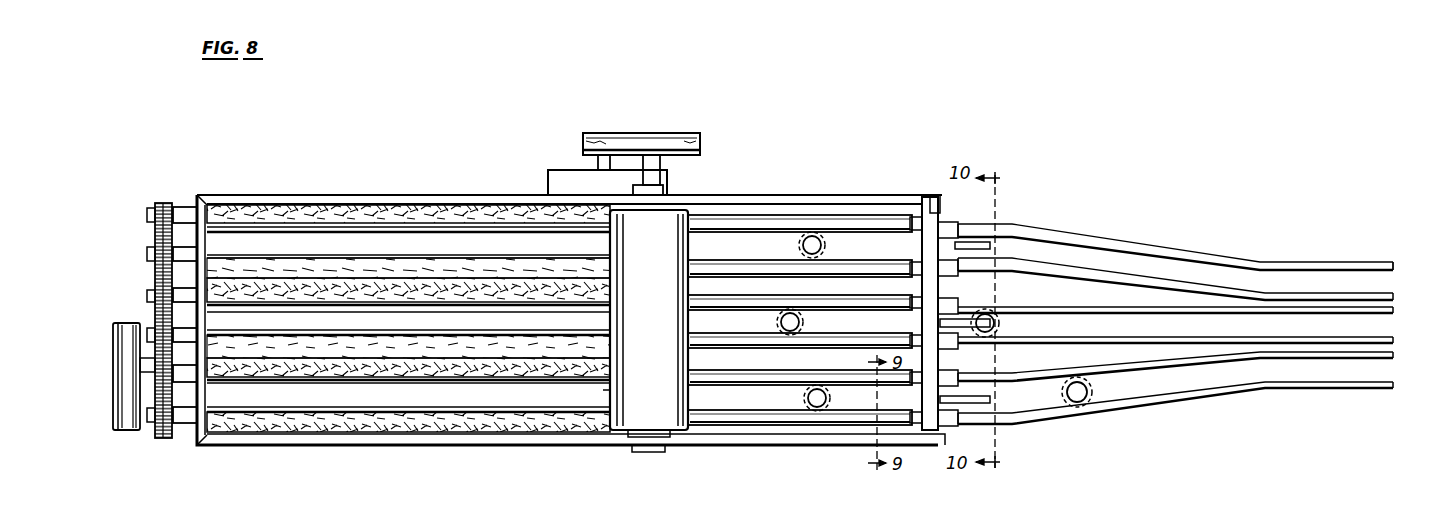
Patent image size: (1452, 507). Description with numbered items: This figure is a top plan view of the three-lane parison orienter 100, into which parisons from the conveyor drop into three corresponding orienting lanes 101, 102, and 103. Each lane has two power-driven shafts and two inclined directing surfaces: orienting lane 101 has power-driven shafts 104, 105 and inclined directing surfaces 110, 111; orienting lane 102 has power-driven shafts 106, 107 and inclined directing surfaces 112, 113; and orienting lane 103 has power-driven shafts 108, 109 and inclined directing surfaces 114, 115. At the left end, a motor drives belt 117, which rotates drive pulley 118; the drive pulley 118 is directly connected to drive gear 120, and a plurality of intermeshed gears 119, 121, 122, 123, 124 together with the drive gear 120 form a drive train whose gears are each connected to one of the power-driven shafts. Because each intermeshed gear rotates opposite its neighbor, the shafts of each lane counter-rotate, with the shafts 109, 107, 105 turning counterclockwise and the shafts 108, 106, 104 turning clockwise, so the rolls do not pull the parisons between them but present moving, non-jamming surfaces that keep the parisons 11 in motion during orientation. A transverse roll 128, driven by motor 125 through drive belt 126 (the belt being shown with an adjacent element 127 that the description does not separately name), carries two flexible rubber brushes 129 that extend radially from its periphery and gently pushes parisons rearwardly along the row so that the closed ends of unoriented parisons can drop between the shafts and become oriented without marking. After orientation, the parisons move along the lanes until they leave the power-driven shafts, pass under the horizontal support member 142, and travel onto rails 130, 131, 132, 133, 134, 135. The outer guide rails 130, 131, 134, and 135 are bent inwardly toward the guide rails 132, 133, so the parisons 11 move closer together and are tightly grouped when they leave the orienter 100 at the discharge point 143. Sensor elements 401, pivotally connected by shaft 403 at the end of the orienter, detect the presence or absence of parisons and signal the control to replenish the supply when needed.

The parison orienter 100 is at (816, 150).
The orienting lane 101 is at (418, 247).
The orienting lane 102 is at (441, 315).
The orienting lane 103 is at (413, 398).
The power-driven shaft 104 is at (832, 222).
The power-driven shaft 105 is at (841, 262).
The power-driven shaft 106 is at (774, 300).
The power-driven shaft 107 is at (746, 342).
The power-driven shaft 108 is at (777, 378).
The power-driven shaft 109 is at (812, 418).
The inclined directing surface 110 is at (291, 215).
The inclined directing surface 111 is at (312, 262).
The inclined directing surface 112 is at (333, 293).
The inclined directing surface 113 is at (275, 350).
The inclined directing surface 114 is at (300, 372).
The inclined directing surface 115 is at (322, 426).
The belt 117 is at (127, 428).
The drive pulley 118 is at (118, 425).
The gear 119 is at (163, 438).
The drive gear 120 is at (170, 430).
The gear 121 is at (160, 335).
The gear 122 is at (160, 296).
The gear 123 is at (160, 256).
The gear 124 is at (162, 226).
The motor 125 is at (562, 172).
The drive belt 126 is at (700, 146).
The cutter blade 127 is at (688, 140).
The transverse roll 128 is at (649, 331).
The flexible rubber brush 129 is at (606, 392).
The rail 130 is at (1128, 243).
The rail 131 is at (1146, 275).
The rail 132 is at (1072, 305).
The rail 133 is at (1075, 344).
The rail 134 is at (1195, 385).
The rail 135 is at (1218, 396).
The horizontal support member 142 is at (931, 225).
The discharge point 143 is at (1398, 312).
The sensor element 401 is at (986, 318).
The shaft 403 is at (940, 440).
The parison 11 is at (780, 323).